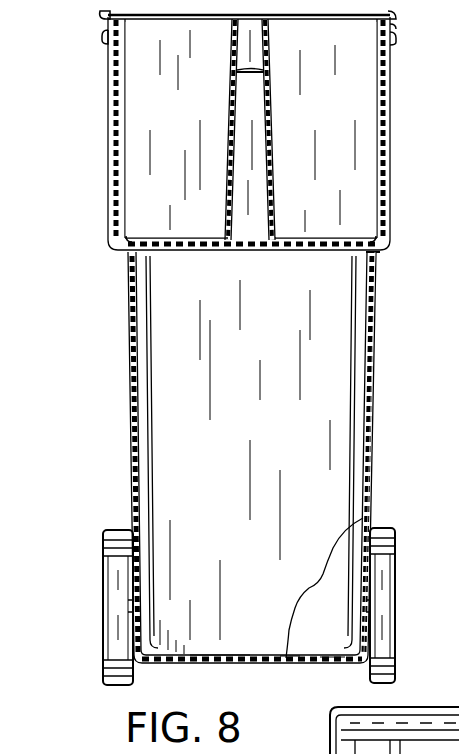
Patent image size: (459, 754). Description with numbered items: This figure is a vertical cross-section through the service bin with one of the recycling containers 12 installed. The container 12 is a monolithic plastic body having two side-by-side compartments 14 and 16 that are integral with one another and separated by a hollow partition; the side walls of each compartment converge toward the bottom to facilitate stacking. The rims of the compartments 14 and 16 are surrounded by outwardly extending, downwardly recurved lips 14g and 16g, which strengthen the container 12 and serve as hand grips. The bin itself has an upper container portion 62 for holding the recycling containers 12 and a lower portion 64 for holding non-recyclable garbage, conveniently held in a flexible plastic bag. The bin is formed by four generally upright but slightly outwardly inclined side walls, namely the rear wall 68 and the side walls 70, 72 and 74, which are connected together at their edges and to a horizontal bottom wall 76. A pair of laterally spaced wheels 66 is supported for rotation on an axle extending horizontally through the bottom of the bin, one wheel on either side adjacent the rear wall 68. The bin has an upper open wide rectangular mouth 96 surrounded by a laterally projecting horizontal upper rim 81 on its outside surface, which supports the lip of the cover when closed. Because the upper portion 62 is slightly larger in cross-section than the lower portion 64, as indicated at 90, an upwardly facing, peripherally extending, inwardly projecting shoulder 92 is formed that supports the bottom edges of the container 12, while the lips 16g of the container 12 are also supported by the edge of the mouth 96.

The recycling container 12 is at (330, 18).
The compartment 14 is at (176, 129).
The lip 14g is at (108, 14).
The compartment 16 is at (326, 129).
The lip 16g is at (390, 14).
The upper container portion 62 is at (94, 250).
The lower portion 64 is at (94, 682).
The wheels 66 is at (110, 638).
The rear wall 68 is at (250, 455).
The side wall 70 is at (372, 426).
The side wall 72 is at (330, 614).
The side wall 74 is at (148, 497).
The bottom wall 76 is at (238, 660).
The upper rim 81 is at (106, 36).
The cross-section transition 90 is at (376, 254).
The shoulder 92 is at (130, 238).
The mouth 96 is at (394, 28).